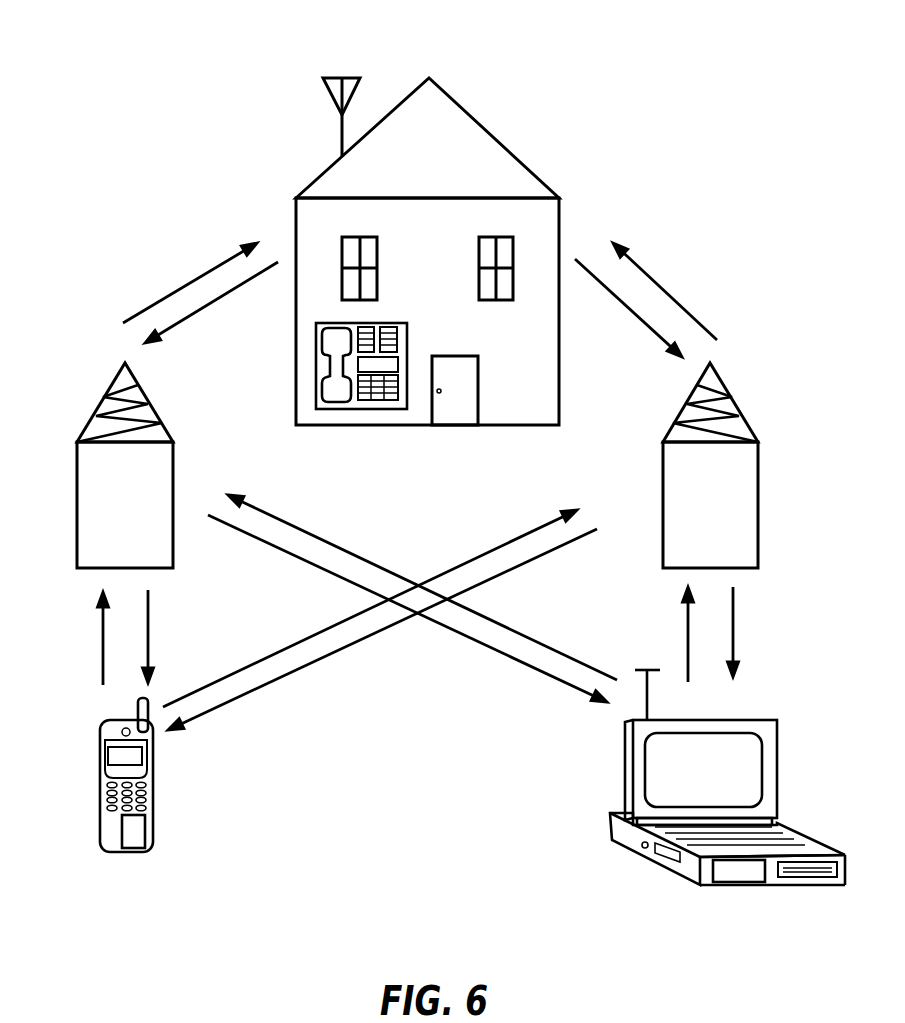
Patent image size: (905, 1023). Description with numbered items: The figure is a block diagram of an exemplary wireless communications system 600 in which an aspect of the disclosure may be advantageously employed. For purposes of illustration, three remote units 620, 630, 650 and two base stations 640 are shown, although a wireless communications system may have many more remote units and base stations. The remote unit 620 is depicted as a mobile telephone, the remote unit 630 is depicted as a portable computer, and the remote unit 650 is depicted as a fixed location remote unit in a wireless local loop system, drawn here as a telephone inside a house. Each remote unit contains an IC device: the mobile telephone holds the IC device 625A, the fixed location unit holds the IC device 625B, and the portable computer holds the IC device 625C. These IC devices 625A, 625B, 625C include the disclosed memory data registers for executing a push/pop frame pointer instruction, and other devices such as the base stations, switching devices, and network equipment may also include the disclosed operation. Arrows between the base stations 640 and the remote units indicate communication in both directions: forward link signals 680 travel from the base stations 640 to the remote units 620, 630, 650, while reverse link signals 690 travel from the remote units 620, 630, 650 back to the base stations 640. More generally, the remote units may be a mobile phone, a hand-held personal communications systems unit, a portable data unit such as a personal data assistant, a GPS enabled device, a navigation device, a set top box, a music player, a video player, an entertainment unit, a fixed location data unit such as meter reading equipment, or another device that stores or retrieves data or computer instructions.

The wireless communications system 600 is at (138, 112).
The remote unit 620 is at (103, 735).
The IC device 625A is at (135, 837).
The IC device 625B is at (387, 365).
The IC device 625C is at (747, 870).
The remote unit 630 is at (757, 720).
The base station 640 is at (102, 402).
The remote unit 650 is at (316, 377).
The forward link signal 680 is at (193, 275).
The reverse link signal 690 is at (198, 313).